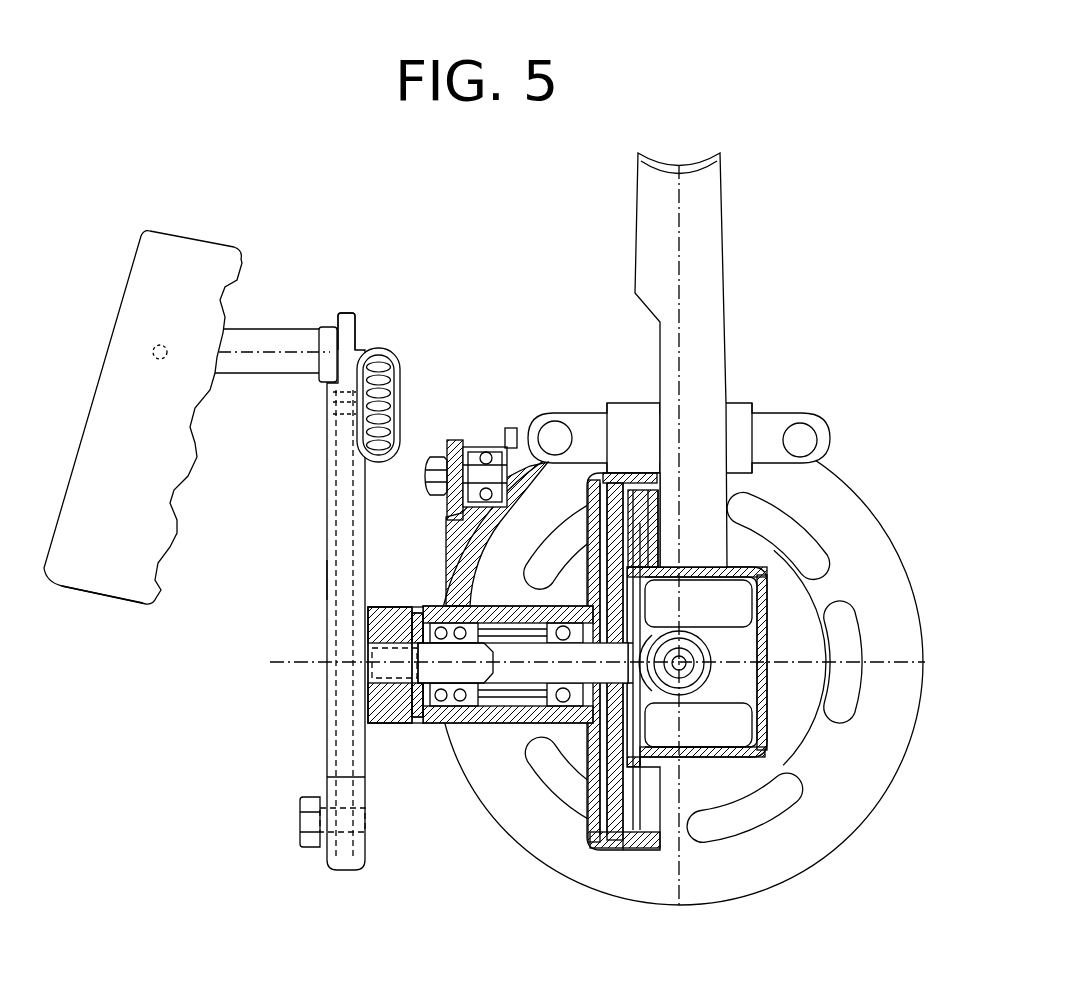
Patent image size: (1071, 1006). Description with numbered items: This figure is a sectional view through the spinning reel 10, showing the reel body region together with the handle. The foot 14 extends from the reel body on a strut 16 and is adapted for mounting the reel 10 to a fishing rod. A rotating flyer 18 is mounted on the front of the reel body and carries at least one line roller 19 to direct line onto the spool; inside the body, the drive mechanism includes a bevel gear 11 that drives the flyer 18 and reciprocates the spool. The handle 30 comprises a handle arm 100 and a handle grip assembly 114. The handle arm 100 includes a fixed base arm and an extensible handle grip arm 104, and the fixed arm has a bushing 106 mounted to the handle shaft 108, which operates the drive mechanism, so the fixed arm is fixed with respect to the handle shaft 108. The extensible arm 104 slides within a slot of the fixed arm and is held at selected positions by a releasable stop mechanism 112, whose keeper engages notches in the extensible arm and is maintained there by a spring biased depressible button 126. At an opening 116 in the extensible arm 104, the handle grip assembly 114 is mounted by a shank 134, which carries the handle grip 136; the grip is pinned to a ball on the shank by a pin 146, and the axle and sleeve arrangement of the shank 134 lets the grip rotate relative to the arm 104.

The spinning reel 10 is at (528, 248).
The bevel gear 11 is at (599, 675).
The foot 14 is at (671, 162).
The strut 16 is at (728, 340).
The rotating flyer 18 is at (758, 880).
The line roller 19 is at (488, 432).
The handle 30 is at (326, 508).
The handle arm 100 is at (327, 578).
The extensible handle grip arm 104 is at (358, 318).
The bushing 106 is at (392, 632).
The handle shaft 108 is at (441, 702).
The releasable stop mechanism 112 is at (400, 385).
The handle grip assembly 114 is at (102, 272).
The opening 116 is at (341, 314).
The depressible button 126 is at (377, 368).
The shank 134 is at (272, 329).
The handle grip 136 is at (103, 602).
The pin 146 is at (153, 350).